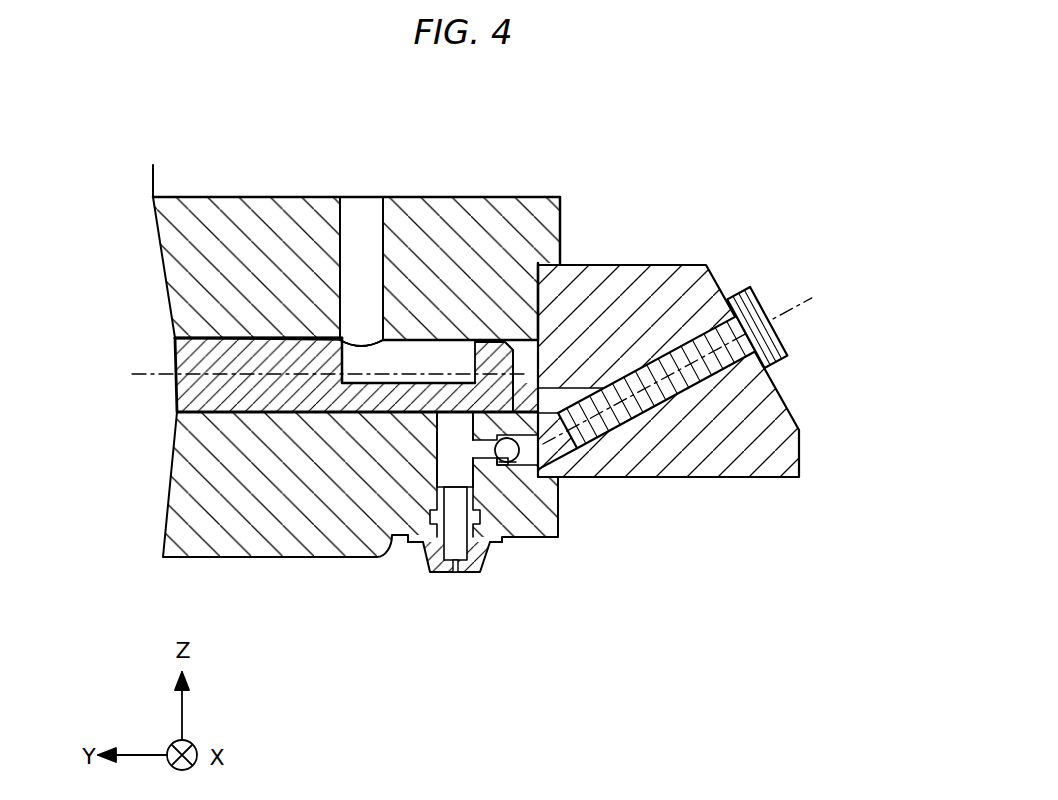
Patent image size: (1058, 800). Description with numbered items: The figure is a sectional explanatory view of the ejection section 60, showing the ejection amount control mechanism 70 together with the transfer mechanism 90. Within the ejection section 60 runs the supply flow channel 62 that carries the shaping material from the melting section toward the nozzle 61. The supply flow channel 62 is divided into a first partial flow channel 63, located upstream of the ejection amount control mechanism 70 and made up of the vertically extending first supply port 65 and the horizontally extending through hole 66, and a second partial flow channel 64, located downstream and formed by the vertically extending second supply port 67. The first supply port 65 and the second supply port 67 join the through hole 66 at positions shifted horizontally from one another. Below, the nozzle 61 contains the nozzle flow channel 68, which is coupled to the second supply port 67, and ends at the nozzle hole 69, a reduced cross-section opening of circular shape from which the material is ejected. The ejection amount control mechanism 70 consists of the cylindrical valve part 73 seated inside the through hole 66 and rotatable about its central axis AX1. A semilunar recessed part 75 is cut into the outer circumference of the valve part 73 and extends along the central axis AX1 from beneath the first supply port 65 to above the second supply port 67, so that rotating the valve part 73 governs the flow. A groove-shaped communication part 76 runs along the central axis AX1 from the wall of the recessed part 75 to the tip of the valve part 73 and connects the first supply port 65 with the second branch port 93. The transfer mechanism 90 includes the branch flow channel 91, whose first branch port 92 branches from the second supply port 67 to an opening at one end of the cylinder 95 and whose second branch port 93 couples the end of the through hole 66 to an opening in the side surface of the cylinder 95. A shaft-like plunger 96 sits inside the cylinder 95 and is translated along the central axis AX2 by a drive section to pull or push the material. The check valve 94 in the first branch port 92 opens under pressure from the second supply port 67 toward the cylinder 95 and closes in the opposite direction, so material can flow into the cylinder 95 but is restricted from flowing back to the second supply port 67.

The ejection section 60 is at (570, 164).
The nozzle 61 is at (496, 572).
The supply flow channel 62 is at (340, 138).
The first partial flow channel 63 is at (361, 271).
The second partial flow channel 64 is at (435, 467).
The first supply port 65 is at (344, 215).
The through hole 66 is at (427, 340).
The second supply port 67 is at (455, 449).
The nozzle flow channel 68 is at (453, 538).
The nozzle hole 69 is at (457, 573).
The ejection amount control mechanism 70 is at (118, 272).
The valve part 73 is at (247, 357).
The recessed part 75 is at (428, 385).
The communication part 76 is at (492, 355).
The transfer mechanism 90 is at (728, 252).
The branch flow channel 91 is at (706, 490).
The first branch port 92 is at (510, 463).
The second branch port 93 is at (573, 392).
The check valve 94 is at (527, 466).
The cylinder 95 is at (688, 350).
The plunger 96 is at (765, 397).
The central axis AX1 is at (302, 375).
The central axis AX2 is at (701, 356).